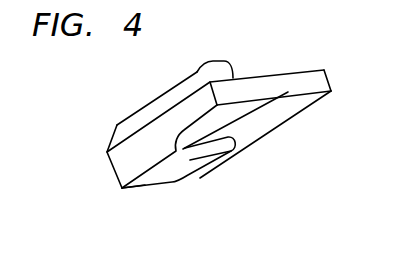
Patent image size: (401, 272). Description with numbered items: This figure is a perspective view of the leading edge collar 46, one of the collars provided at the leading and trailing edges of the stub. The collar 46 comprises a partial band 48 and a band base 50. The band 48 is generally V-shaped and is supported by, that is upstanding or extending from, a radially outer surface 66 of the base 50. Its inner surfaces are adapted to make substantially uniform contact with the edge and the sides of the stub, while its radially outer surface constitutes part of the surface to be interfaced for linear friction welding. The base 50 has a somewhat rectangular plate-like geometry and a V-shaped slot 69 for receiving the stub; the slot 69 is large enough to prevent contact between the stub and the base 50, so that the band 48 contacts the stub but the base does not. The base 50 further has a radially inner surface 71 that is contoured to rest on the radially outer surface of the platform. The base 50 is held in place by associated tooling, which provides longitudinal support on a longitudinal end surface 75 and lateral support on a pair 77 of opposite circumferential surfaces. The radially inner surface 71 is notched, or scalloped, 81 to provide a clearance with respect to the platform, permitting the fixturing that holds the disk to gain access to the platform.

The collar 46 is at (65, 120).
The partial band 48 is at (229, 57).
The band base 50 is at (333, 75).
The radially outer surface 66 is at (290, 68).
The V-shaped slot 69 is at (162, 184).
The radially inner surface 71 is at (128, 183).
The longitudinal end surface 75 is at (297, 88).
The pair of opposite circumferential surfaces 77 is at (152, 143).
The notch 81 is at (209, 123).